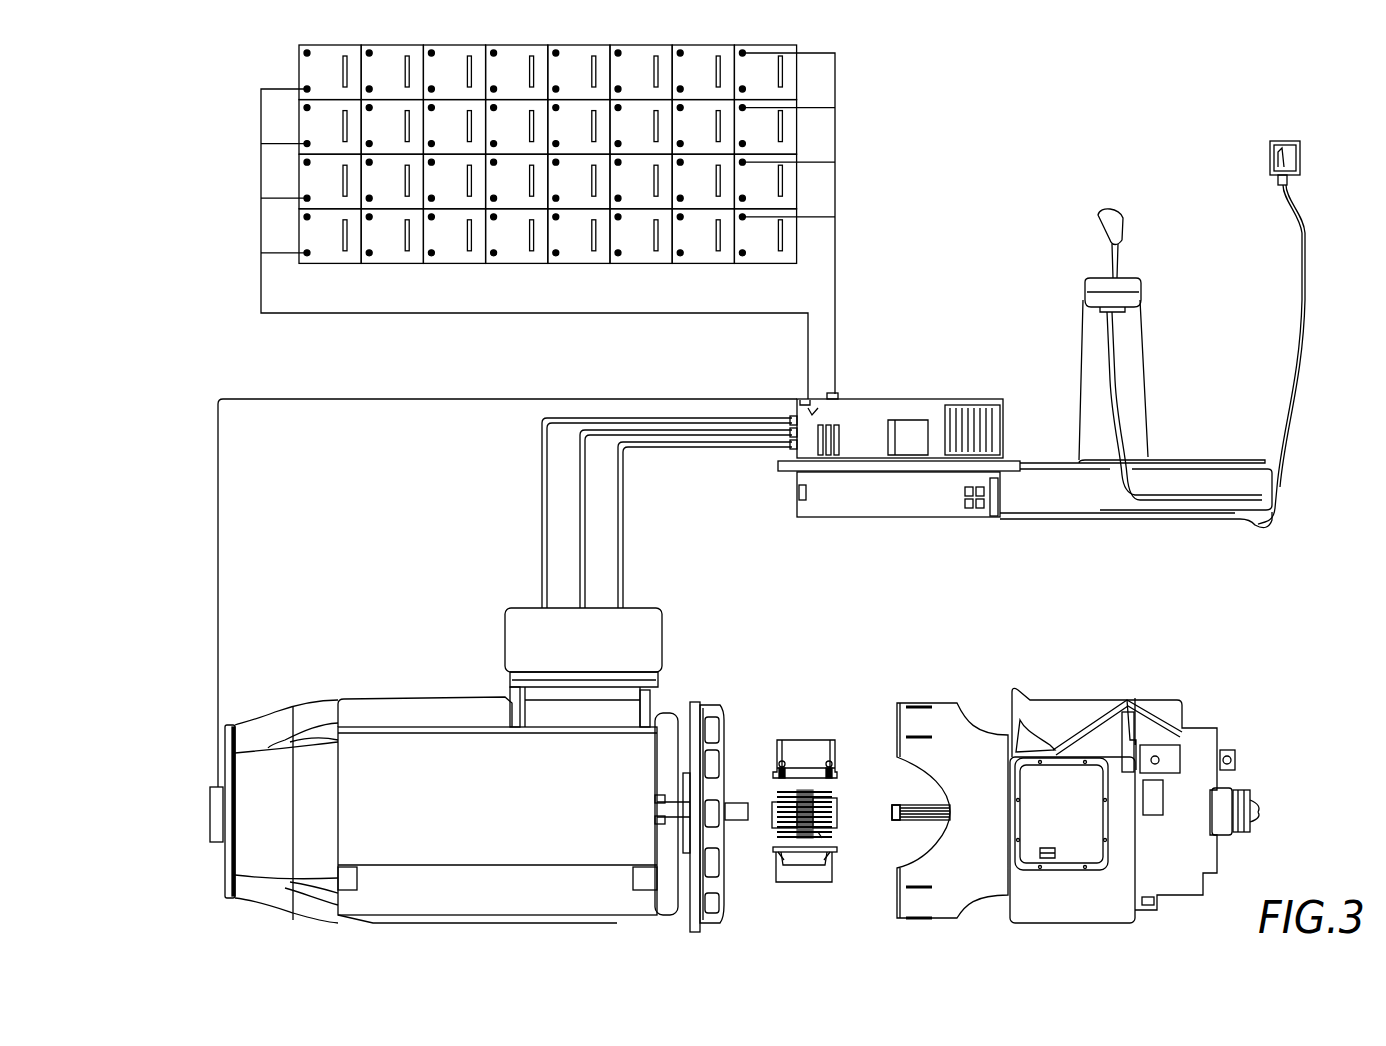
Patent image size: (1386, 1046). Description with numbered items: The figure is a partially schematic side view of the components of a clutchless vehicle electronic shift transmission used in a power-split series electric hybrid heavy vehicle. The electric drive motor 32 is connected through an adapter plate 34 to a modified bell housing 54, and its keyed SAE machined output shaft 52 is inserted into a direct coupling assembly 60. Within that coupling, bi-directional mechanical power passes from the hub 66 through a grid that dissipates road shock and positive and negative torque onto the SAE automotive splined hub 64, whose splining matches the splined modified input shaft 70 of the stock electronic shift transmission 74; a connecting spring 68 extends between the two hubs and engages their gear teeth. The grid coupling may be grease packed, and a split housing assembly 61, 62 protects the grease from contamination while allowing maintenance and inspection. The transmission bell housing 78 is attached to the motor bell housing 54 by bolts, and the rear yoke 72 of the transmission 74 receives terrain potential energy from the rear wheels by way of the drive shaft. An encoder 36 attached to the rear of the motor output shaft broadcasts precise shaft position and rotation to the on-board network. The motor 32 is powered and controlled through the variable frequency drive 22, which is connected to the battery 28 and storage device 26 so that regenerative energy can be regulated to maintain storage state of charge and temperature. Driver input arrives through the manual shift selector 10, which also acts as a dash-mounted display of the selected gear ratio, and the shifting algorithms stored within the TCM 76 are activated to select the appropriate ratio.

The manual shift selector 10 is at (1262, 180).
The variable frequency drive 22 is at (876, 382).
The storage device 26 is at (822, 158).
The battery 28 is at (812, 78).
The electric drive motor 32 is at (444, 672).
The adapter plate 34 is at (696, 700).
The encoder 36 is at (214, 847).
The output shaft 52 is at (735, 827).
The bell housing 54 is at (731, 705).
The direct coupling assembly 60 is at (822, 707).
The split housing assembly 61 is at (818, 748).
The split housing assembly 62 is at (802, 878).
The splined hub 64 is at (830, 812).
The hub 66 is at (775, 800).
The connecting spring 68 is at (822, 836).
The input shaft 70 is at (898, 838).
The rear yoke 72 is at (1268, 786).
The electronic shift transmission 74 is at (1062, 696).
The TCM 76 is at (1063, 912).
The bell housing 78 is at (904, 698).